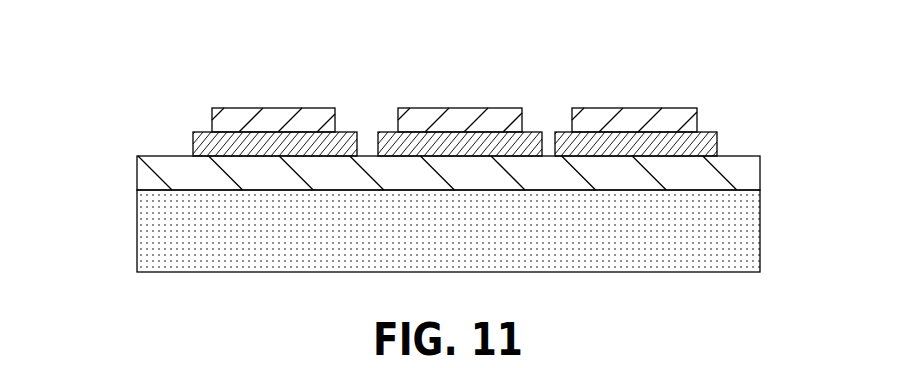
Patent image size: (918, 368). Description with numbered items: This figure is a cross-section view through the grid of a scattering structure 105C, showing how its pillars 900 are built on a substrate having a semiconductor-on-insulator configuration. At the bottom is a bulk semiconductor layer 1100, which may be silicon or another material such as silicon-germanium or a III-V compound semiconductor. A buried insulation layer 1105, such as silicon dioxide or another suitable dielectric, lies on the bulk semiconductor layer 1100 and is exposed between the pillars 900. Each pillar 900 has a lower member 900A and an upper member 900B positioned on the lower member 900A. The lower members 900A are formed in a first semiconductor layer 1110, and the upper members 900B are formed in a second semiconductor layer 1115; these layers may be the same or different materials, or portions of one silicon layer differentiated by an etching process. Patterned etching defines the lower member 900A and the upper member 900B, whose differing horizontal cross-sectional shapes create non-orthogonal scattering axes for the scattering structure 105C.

The scattering structure 105C is at (98, 53).
The pillars 900 is at (245, 71).
The lower member 900A is at (347, 137).
The upper member 900B is at (300, 117).
The bulk semiconductor layer 1100 is at (153, 253).
The buried insulation layer 1105 is at (152, 182).
The first semiconductor layer 1110 is at (193, 141).
The second semiconductor layer 1115 is at (216, 112).